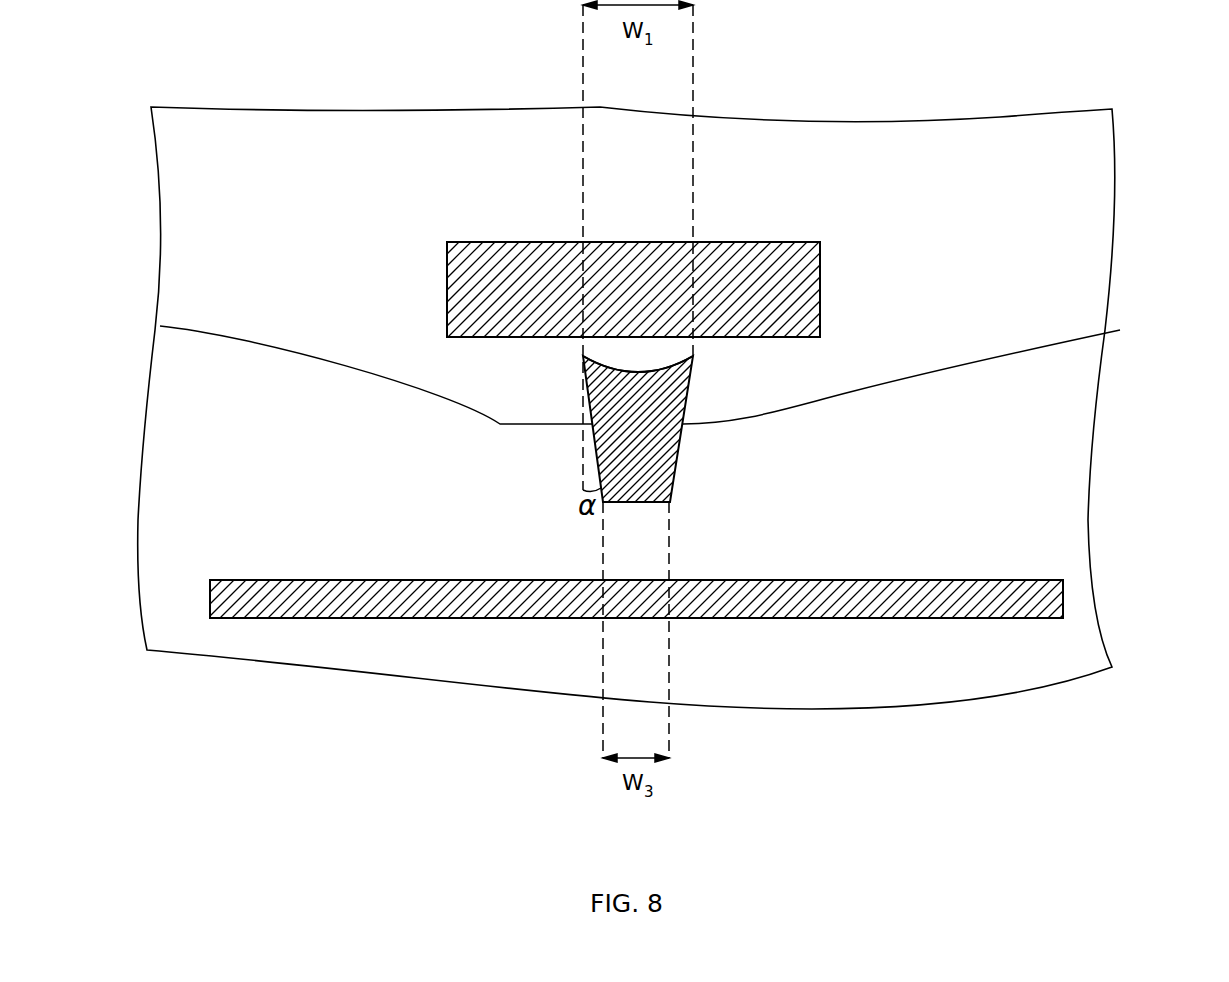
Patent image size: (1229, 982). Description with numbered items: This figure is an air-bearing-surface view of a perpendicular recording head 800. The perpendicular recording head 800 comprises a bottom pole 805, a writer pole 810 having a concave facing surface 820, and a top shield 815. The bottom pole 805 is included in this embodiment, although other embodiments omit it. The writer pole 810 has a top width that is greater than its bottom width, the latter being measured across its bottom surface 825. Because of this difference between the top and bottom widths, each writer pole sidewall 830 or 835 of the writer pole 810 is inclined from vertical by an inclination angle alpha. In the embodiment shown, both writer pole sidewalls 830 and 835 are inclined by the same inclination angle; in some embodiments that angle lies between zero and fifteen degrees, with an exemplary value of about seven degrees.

The perpendicular recording head 800 is at (1045, 112).
The bottom pole 805 is at (210, 598).
The writer pole 810 is at (636, 429).
The top shield 815 is at (563, 242).
The concave facing surface 820 is at (623, 370).
The bottom surface 825 is at (650, 503).
The writer pole sidewall 830 is at (160, 326).
The writer pole sidewall 835 is at (1120, 330).